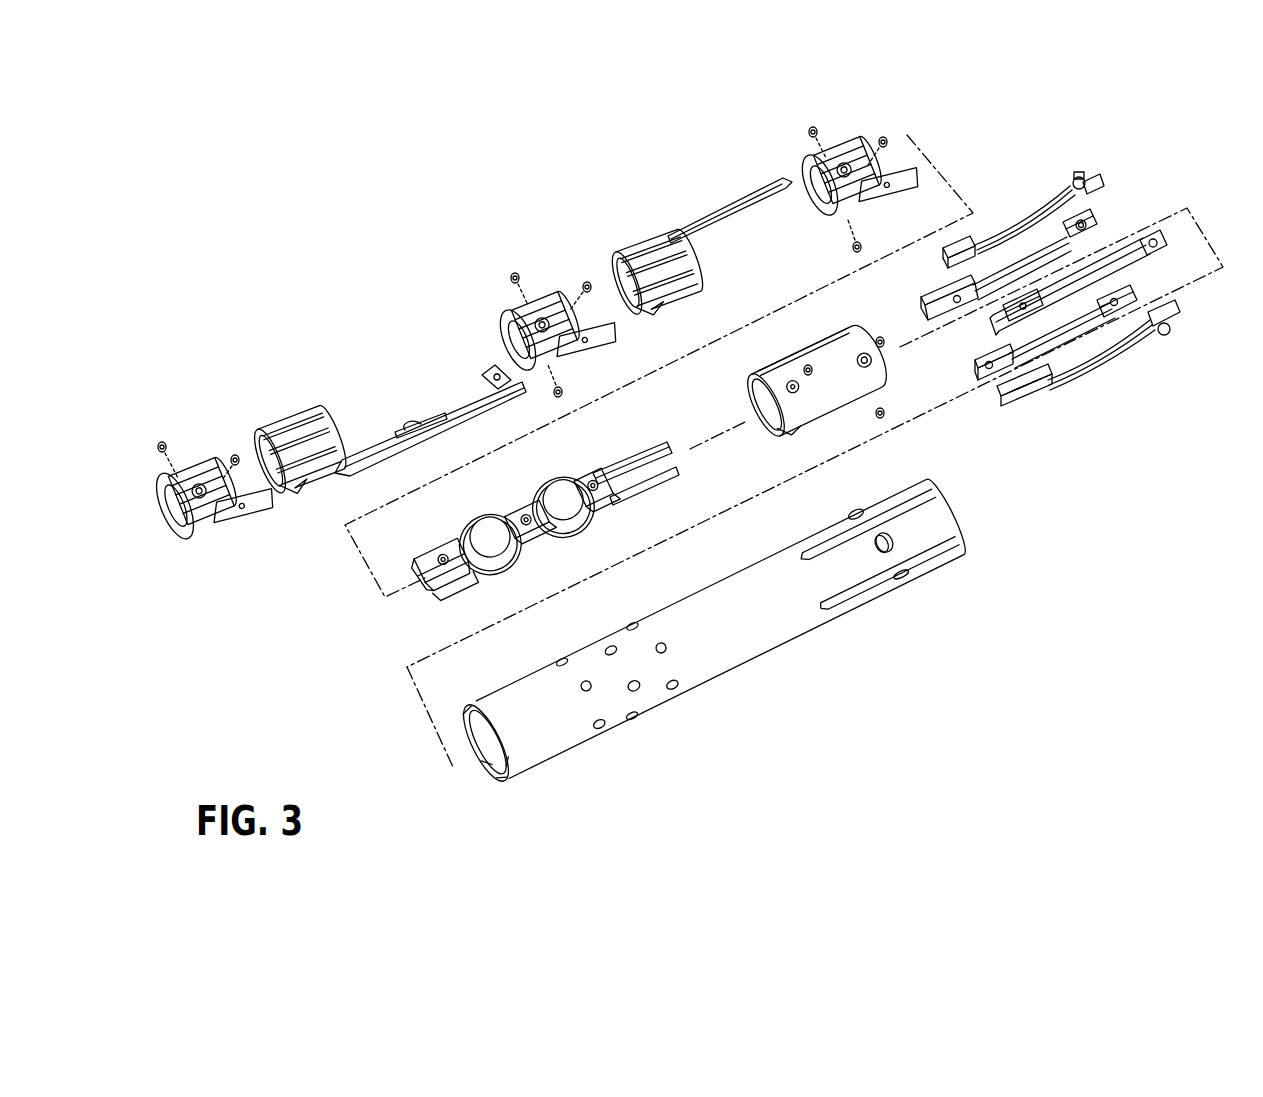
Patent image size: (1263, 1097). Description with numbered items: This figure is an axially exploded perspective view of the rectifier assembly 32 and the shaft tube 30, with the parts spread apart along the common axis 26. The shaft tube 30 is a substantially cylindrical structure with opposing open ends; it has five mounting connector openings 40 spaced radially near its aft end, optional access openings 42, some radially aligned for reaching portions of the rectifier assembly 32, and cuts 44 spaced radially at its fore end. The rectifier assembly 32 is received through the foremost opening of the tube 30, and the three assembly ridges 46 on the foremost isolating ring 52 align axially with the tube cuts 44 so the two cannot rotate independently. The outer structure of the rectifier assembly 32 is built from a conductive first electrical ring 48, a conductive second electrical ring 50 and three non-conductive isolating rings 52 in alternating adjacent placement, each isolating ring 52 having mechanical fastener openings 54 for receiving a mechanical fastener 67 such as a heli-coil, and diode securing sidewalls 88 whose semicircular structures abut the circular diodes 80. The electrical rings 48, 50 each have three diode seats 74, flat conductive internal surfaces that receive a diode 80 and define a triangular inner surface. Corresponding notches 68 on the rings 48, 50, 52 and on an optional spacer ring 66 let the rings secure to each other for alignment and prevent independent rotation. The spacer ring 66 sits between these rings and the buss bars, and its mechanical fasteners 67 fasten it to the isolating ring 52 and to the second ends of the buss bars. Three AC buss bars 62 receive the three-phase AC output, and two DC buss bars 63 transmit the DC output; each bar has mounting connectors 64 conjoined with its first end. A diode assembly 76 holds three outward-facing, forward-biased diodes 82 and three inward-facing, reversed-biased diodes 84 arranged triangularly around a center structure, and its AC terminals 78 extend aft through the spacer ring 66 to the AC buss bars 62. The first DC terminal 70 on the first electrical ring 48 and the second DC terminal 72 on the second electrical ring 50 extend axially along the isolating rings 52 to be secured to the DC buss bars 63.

The common axis 26 is at (428, 706).
The shaft tube 30 is at (764, 640).
The rectifier assembly 32 is at (405, 182).
The mounting connector openings 40 is at (898, 552).
The access openings 42 is at (602, 692).
The cuts 44 is at (515, 770).
The assembly ridges 46 is at (200, 548).
The first electrical ring 48 is at (650, 248).
The second electrical ring 50 is at (298, 423).
The isolating ring 52 is at (200, 474).
The mechanical fastener openings 54 is at (226, 522).
The AC buss bars 62 is at (1028, 222).
The DC buss bars 63 is at (988, 282).
The mounting connectors 64 is at (1092, 176).
The spacer ring 66 is at (862, 383).
The mechanical fasteners 67 is at (163, 442).
The notches 68 is at (215, 468).
The first DC terminal 70 is at (728, 200).
The second DC terminal 72 is at (470, 398).
The diode seat 74 is at (265, 478).
The diode assembly 76 is at (465, 597).
The AC terminals 78 is at (630, 453).
The circular diodes 80 is at (570, 507).
The outward-facing, forward-biased diodes 82 is at (450, 530).
The inward-facing, reversed-biased diodes 84 is at (547, 468).
The diode securing sidewalls 88 is at (228, 505).